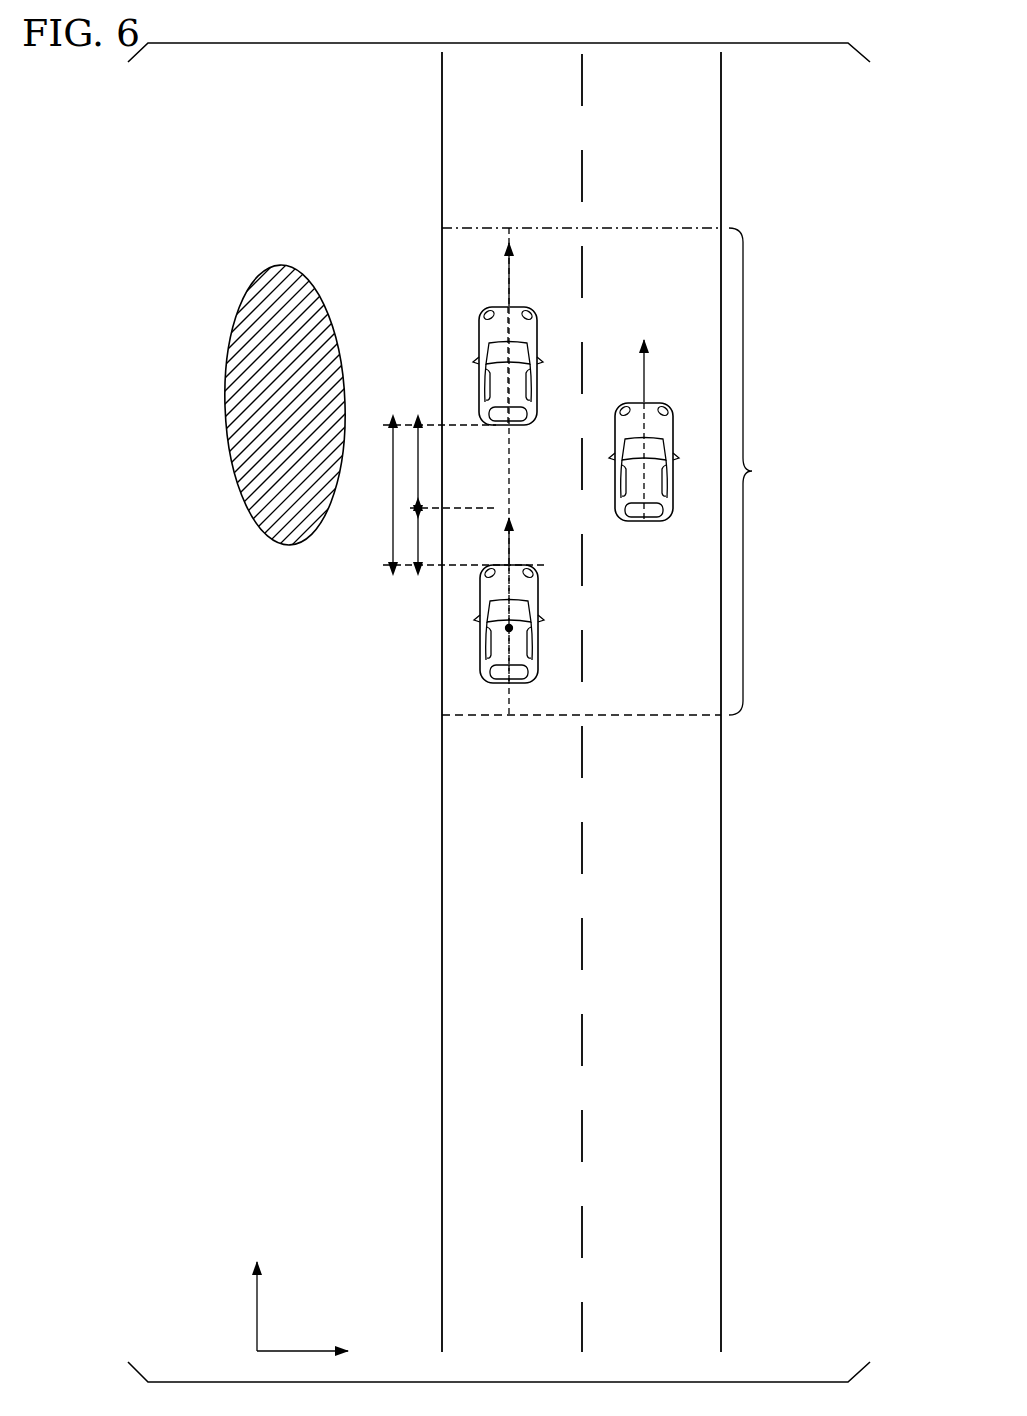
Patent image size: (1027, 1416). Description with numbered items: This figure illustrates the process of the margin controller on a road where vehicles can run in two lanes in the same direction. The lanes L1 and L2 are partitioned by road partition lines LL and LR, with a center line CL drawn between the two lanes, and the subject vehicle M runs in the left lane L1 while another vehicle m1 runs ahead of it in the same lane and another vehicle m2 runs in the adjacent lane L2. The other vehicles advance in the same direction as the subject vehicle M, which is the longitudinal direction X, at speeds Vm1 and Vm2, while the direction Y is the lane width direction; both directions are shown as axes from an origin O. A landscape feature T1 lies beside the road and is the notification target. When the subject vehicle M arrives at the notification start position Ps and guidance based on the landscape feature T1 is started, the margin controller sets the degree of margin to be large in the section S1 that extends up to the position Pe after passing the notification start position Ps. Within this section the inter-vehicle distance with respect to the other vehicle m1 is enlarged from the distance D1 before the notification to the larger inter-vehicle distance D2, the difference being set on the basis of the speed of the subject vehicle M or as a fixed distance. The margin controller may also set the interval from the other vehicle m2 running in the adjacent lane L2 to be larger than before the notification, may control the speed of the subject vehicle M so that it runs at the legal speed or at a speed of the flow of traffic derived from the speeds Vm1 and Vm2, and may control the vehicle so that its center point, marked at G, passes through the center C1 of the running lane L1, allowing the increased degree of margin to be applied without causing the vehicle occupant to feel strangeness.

The road partition line LL is at (444, 1233).
The road partition line LR is at (723, 1233).
The center lane marking line CL is at (584, 1233).
The lane L1 is at (528, 1341).
The lane L2 is at (668, 1341).
The position Pe is at (468, 227).
The notification start position Ps is at (468, 720).
The section S1 is at (760, 471).
The center of the running lane C1 is at (512, 468).
The other vehicle m1 is at (480, 373).
The speed Vm1 is at (505, 279).
The subject vehicle M is at (481, 633).
The center of gravity of host vehicle G is at (512, 628).
The other vehicle m2 is at (644, 523).
The speed Vm2 is at (647, 376).
The landscape feature T1 is at (224, 403).
The inter-vehicle distance D1 is at (453, 467).
The inter-vehicle distance D2 is at (449, 495).
The direction X is at (256, 1290).
The direction Y is at (312, 1352).
The origin O is at (239, 1363).